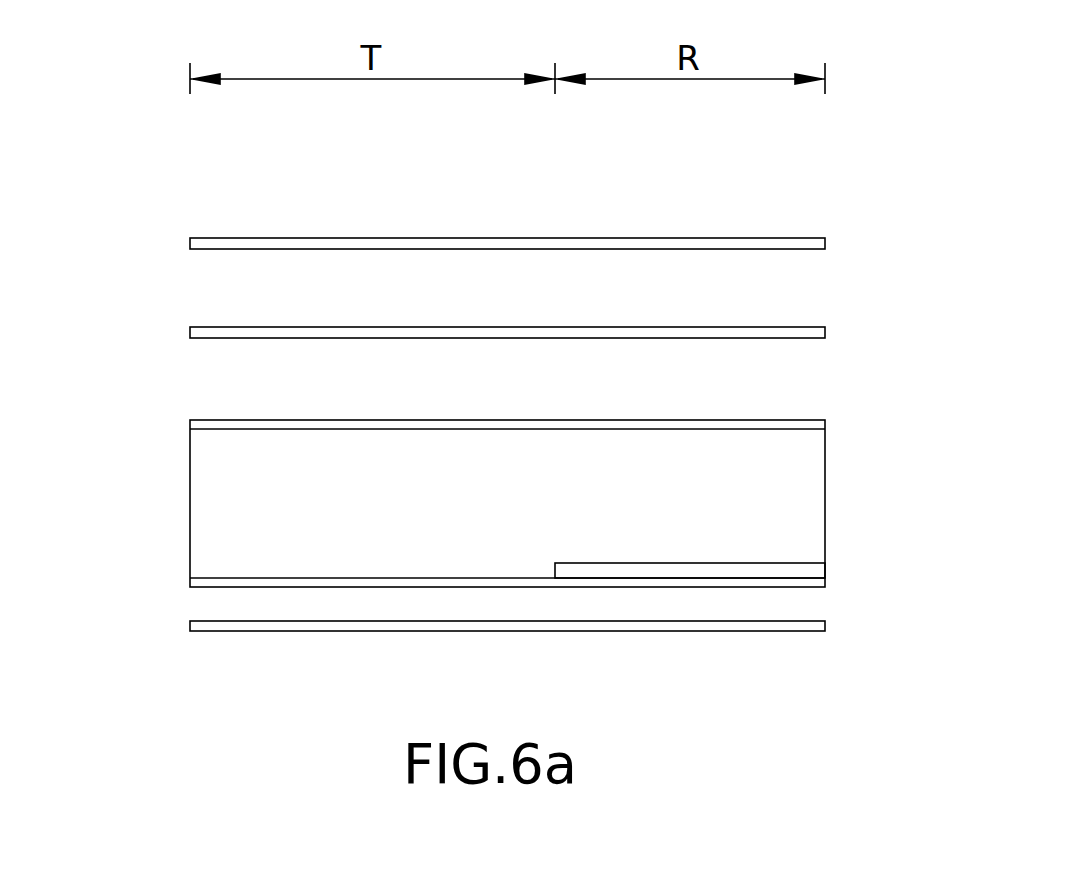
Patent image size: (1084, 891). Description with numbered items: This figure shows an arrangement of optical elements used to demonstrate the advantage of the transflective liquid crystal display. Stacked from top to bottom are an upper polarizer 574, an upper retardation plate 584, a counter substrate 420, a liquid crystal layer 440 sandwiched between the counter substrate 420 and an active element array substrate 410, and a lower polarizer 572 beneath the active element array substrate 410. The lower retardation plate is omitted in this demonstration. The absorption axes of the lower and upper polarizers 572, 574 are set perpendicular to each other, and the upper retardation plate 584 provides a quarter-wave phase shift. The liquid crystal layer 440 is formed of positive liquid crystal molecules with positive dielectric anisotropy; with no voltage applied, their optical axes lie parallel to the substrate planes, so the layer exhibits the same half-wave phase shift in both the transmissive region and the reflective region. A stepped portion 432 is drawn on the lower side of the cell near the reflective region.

The upper polarizer 574 is at (190, 240).
The upper retardation plate 584 is at (190, 329).
The counter substrate 420 is at (190, 421).
The liquid crystal layer 440 is at (196, 510).
The active element array substrate 410 is at (190, 583).
The reflective electrode step portion 432 is at (825, 570).
The lower polarizer 572 is at (825, 625).